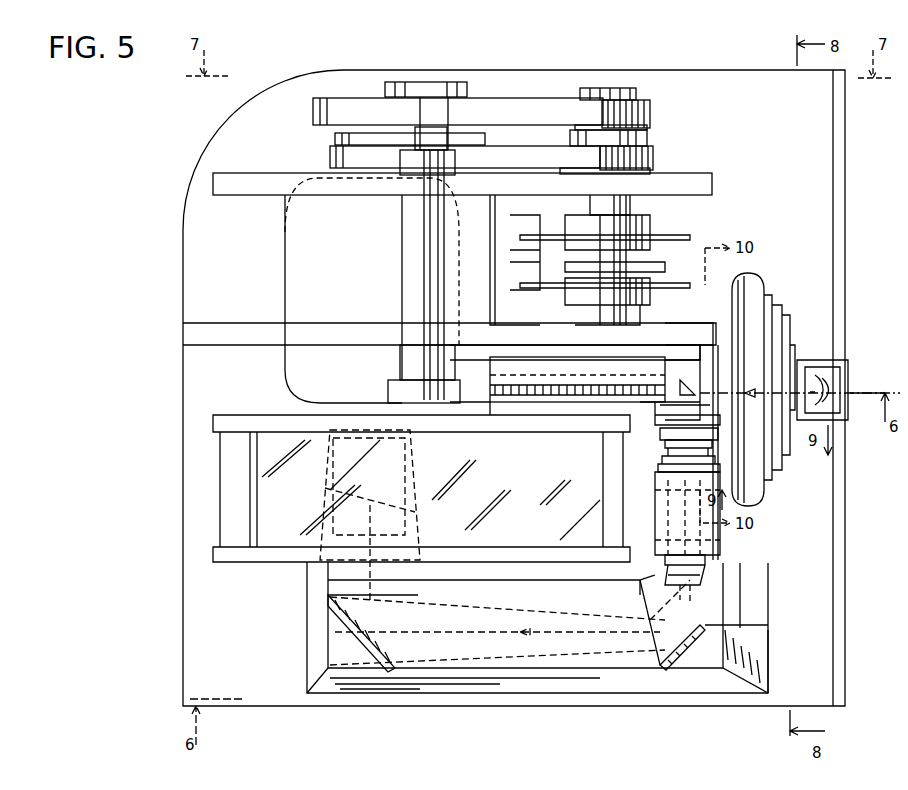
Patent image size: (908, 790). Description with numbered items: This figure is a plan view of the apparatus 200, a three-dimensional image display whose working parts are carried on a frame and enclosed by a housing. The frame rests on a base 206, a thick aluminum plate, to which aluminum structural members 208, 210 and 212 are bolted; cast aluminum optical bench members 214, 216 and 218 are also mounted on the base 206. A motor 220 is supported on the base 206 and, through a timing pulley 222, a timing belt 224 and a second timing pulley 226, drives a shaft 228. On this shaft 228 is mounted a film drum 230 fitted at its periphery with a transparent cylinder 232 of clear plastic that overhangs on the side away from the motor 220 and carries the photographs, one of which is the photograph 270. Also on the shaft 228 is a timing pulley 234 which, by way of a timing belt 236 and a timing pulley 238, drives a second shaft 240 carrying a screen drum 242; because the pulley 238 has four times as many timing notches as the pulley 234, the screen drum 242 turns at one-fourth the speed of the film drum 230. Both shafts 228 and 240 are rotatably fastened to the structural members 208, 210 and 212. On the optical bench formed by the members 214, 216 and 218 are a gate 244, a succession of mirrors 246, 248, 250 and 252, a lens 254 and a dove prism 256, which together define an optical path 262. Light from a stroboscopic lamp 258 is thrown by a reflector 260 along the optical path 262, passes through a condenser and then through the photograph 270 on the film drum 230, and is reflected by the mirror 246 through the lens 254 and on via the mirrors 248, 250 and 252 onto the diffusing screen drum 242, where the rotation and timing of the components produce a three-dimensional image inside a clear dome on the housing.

The apparatus 200 is at (174, 260).
The base 206 is at (183, 412).
The structural member 208 is at (184, 334).
The structural member 210 is at (222, 182).
The structural member 212 is at (470, 245).
The optical bench member 214 is at (548, 602).
The optical bench member 216 is at (370, 661).
The optical bench member 218 is at (660, 408).
The motor 220 is at (357, 257).
The timing pulley 222 is at (338, 148).
The timing belt 224 is at (498, 158).
The timing pulley 226 is at (658, 146).
The shaft 228 is at (646, 134).
The film drum 230 is at (690, 378).
The transparent cylinder 232 is at (712, 350).
The timing pulley 234 is at (640, 100).
The timing belt 236 is at (505, 112).
The timing pulley 238 is at (490, 96).
The shaft 240 is at (449, 138).
The screen drum 242 is at (268, 415).
The gate 244 is at (665, 434).
The mirror 246 is at (672, 390).
The mirror 248 is at (705, 622).
The mirror 250 is at (345, 623).
The mirror 252 is at (415, 448).
The lens 254 is at (662, 462).
The dove prism 256 is at (660, 522).
The stroboscopic lamp 258 is at (820, 378).
The reflector 260 is at (820, 412).
The optical path 262 is at (695, 592).
The photograph 270 is at (558, 390).